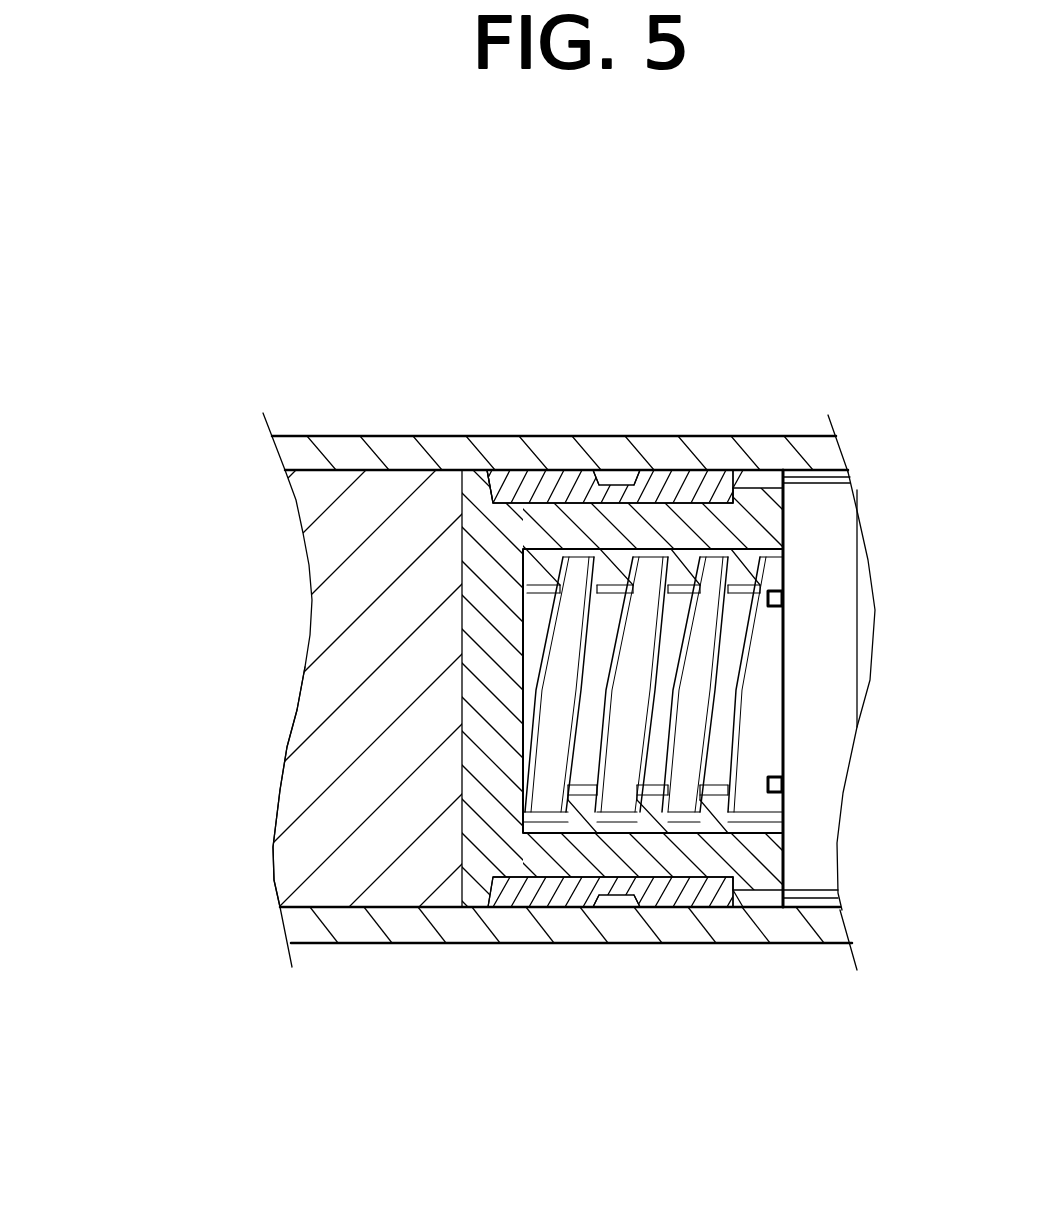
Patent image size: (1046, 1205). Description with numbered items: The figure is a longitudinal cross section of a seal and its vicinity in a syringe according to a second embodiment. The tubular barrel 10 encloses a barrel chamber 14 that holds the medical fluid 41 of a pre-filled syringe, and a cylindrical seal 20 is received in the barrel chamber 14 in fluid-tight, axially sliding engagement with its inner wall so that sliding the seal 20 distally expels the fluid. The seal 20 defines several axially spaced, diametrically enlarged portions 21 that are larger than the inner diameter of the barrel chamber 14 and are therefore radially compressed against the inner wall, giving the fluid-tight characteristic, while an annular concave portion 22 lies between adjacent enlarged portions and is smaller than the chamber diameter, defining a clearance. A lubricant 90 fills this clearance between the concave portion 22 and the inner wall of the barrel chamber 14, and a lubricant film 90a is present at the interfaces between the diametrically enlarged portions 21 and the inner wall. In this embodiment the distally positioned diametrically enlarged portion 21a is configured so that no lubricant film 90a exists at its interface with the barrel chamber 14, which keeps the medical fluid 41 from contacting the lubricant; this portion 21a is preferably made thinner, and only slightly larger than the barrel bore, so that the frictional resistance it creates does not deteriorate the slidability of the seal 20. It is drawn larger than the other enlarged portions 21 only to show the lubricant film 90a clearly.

The barrel 10 is at (352, 450).
The barrel chamber 14 is at (357, 573).
The medical fluid 41 is at (310, 757).
The seal 20 is at (480, 835).
The diametrically enlarged portion 21 is at (617, 490).
The distally positioned diametrically enlarged portion 21a is at (473, 478).
The concave portion 22 is at (550, 483).
The lubricant 90 is at (543, 882).
The lubricant film 90a is at (765, 897).